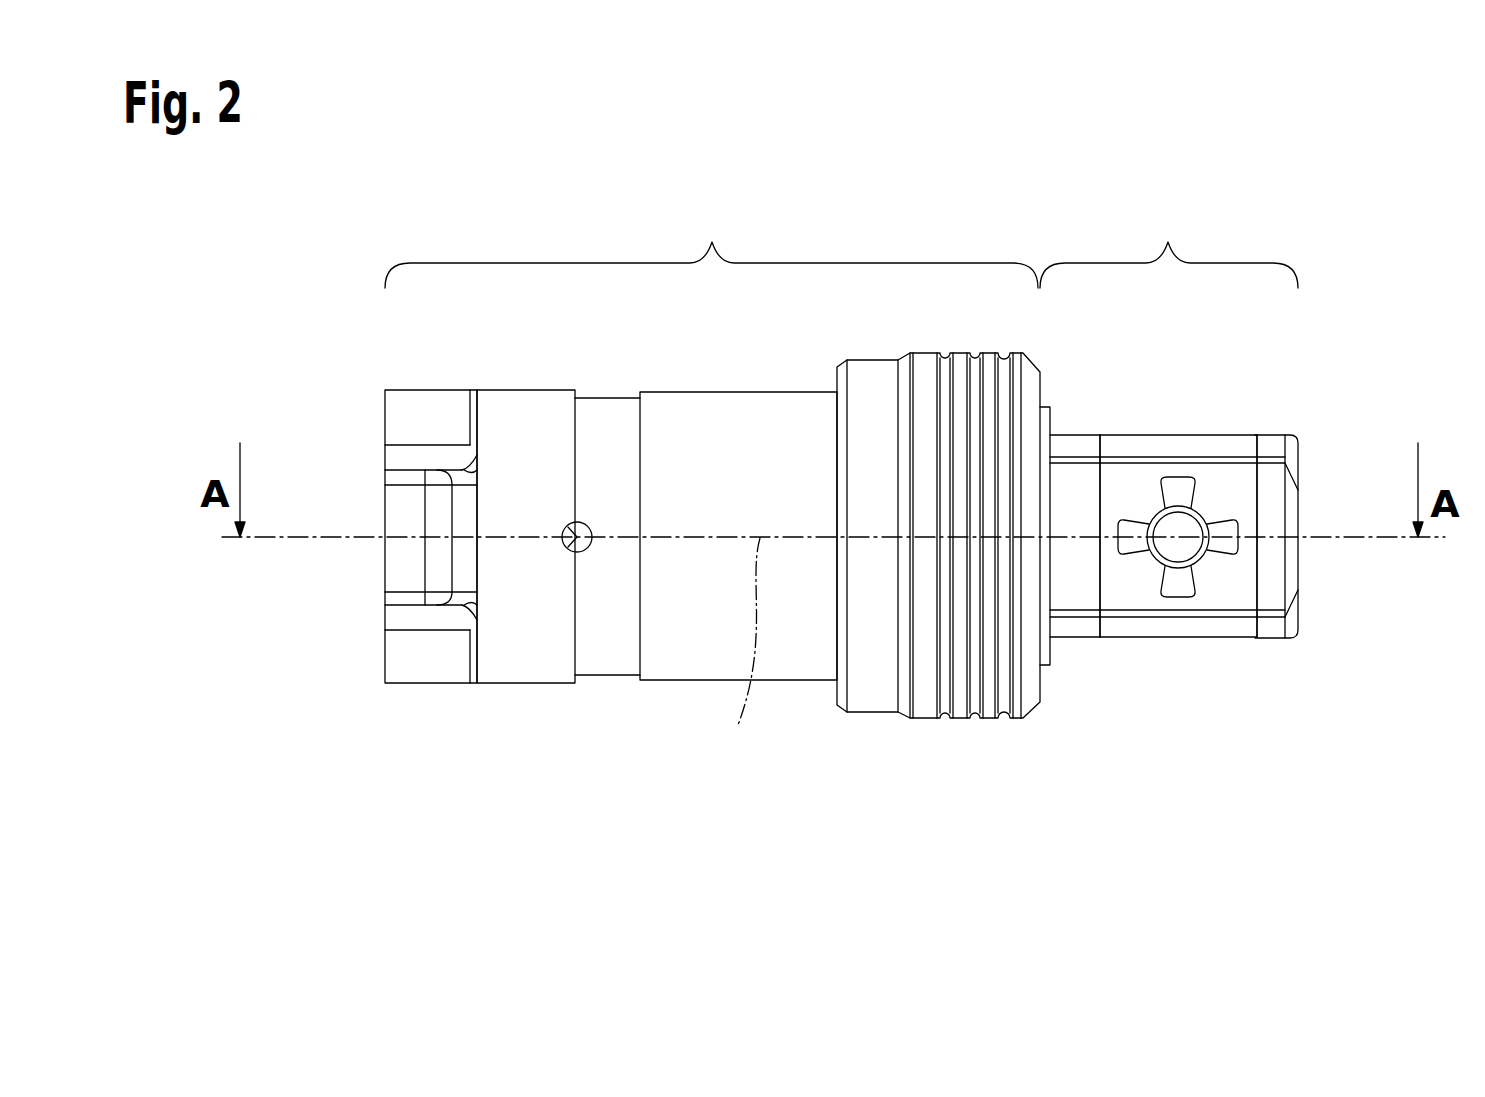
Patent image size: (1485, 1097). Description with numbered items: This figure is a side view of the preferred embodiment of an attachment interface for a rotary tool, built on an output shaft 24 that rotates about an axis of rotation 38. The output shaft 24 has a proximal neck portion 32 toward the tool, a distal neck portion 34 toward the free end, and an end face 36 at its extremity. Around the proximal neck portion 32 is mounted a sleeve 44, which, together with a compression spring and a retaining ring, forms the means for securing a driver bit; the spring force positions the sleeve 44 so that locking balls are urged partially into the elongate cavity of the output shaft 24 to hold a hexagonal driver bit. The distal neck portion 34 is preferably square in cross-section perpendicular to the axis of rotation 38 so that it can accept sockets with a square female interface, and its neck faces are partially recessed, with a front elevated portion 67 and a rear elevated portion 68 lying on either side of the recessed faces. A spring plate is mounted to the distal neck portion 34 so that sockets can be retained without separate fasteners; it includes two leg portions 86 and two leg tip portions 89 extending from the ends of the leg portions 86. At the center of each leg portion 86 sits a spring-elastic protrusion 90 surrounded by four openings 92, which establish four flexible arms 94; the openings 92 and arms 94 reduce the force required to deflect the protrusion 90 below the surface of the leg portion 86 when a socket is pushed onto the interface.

The output shaft 24 is at (685, 667).
The proximal neck portion 32 is at (712, 242).
The distal neck portion 34 is at (1168, 242).
The end face 36 is at (1325, 488).
The axis of rotation 38 is at (741, 654).
The sleeve 44 is at (922, 710).
The front elevated portion 67 is at (1273, 433).
The rear elevated portion 68 is at (1077, 433).
The leg portion 86 is at (1237, 573).
The leg tip portion 89 is at (1122, 628).
The spring-elastic protrusion 90 is at (1188, 527).
The opening 92 is at (1175, 590).
The flexible arm 94 is at (1212, 565).